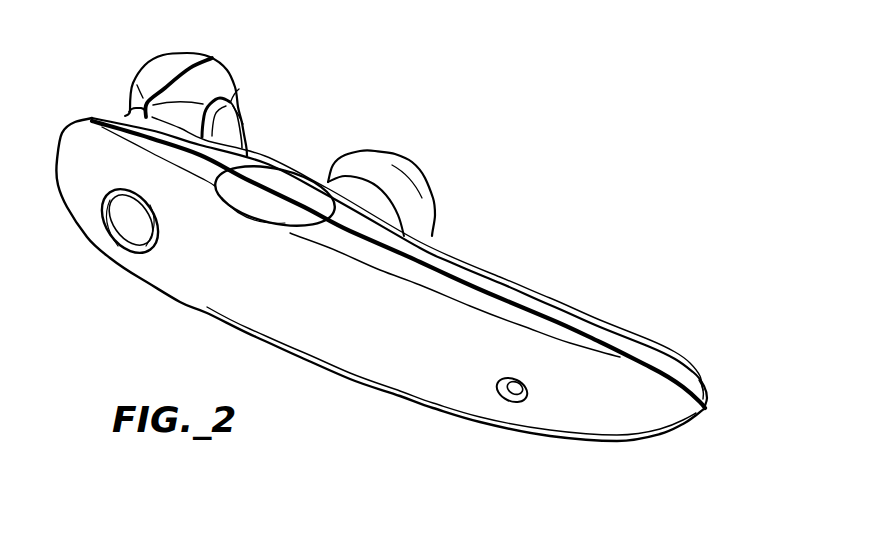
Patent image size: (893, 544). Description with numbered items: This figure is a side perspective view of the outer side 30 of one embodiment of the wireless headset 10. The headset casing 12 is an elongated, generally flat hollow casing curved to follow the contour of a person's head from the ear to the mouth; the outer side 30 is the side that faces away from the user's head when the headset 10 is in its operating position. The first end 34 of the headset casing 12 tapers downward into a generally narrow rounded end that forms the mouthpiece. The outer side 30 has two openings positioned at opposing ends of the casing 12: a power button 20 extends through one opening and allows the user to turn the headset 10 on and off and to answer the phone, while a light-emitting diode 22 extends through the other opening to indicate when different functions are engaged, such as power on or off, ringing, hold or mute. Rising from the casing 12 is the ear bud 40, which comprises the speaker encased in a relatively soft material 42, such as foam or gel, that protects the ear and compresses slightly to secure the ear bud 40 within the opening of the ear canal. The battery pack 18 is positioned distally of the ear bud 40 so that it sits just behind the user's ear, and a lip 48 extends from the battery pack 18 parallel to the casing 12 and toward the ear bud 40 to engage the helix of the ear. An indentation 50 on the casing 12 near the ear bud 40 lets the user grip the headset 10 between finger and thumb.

The headset 10 is at (523, 234).
The headset casing 12 is at (435, 412).
The battery pack 18 is at (157, 63).
The power button 20 is at (108, 215).
The light-emitting diode 22 is at (517, 384).
The outer side 30 is at (407, 351).
The first end 34 is at (714, 397).
The ear bud 40 is at (434, 188).
The soft material 42 is at (378, 163).
The lip 48 is at (238, 110).
The indentation 50 is at (276, 178).